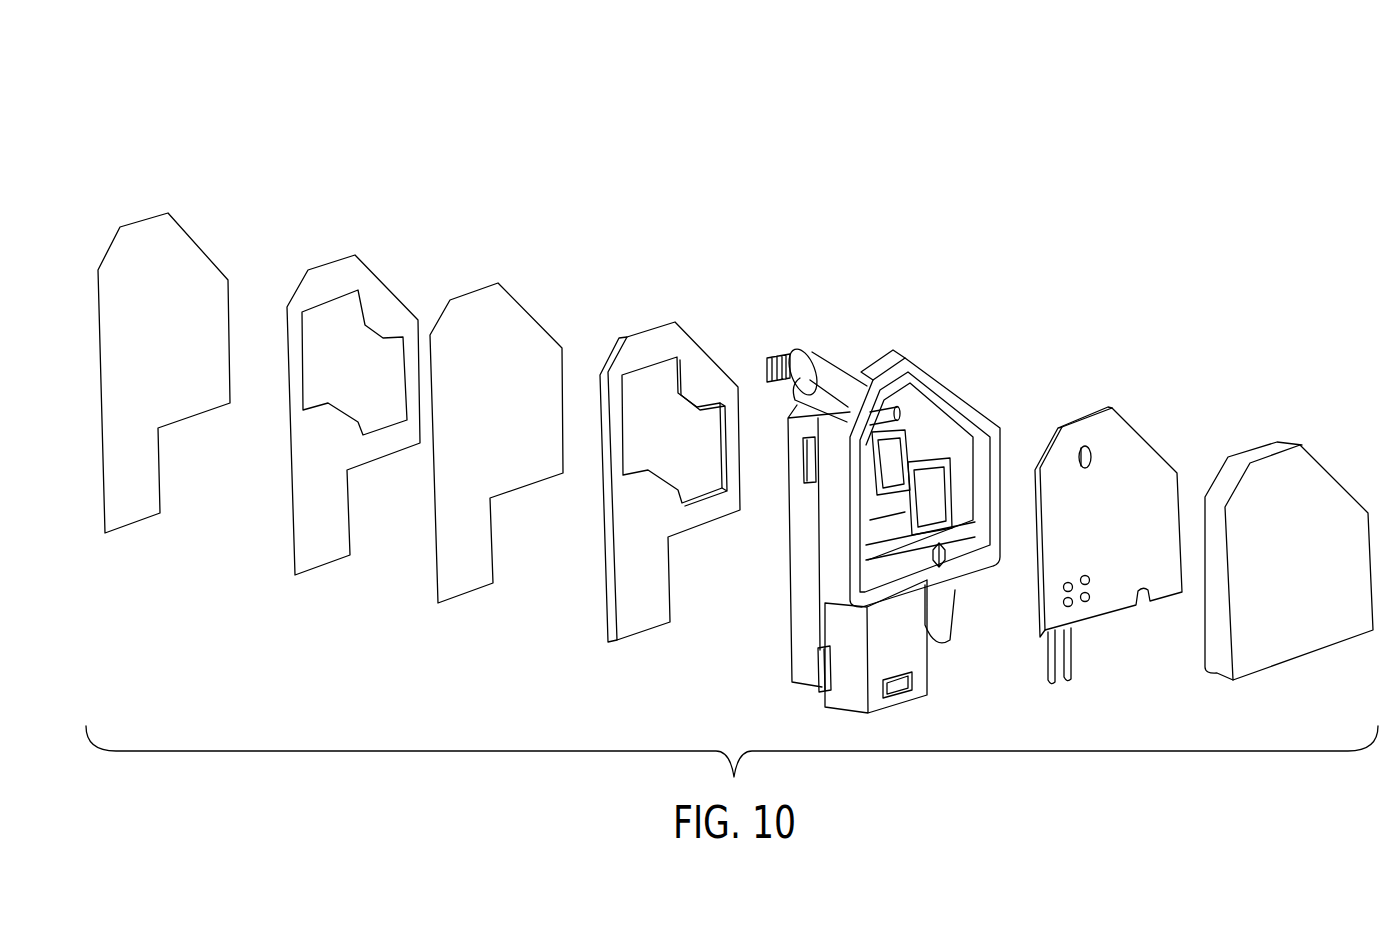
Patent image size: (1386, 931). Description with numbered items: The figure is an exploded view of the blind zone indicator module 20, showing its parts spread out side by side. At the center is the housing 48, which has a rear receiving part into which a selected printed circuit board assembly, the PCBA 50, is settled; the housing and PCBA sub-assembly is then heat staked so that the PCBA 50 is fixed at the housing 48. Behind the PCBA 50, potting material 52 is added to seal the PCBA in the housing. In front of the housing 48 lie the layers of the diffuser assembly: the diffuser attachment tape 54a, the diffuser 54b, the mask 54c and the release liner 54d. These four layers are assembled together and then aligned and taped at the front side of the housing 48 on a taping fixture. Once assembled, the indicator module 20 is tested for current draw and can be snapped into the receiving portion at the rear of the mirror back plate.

The indicator module 20 is at (922, 117).
The housing 48 is at (912, 345).
The printed circuit board assembly (PCBA) 50 is at (1100, 397).
The potting material 52 is at (1322, 450).
The diffuser attachment tape 54a is at (690, 313).
The diffuser 54b is at (487, 275).
The mask 54c is at (353, 243).
The release liner 54d is at (180, 207).